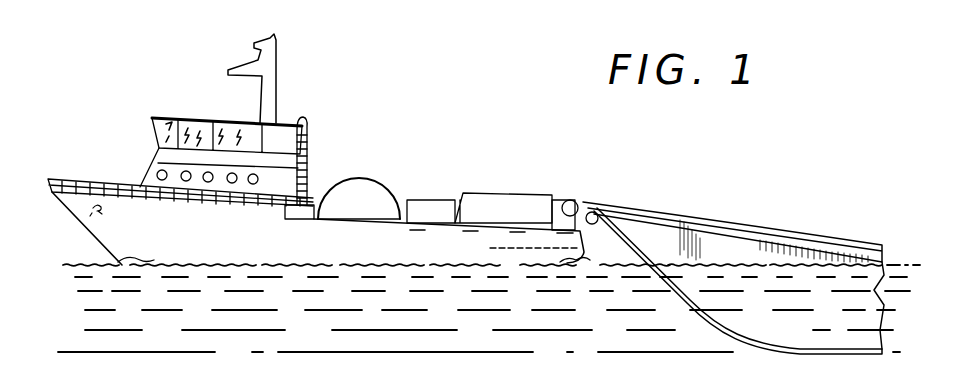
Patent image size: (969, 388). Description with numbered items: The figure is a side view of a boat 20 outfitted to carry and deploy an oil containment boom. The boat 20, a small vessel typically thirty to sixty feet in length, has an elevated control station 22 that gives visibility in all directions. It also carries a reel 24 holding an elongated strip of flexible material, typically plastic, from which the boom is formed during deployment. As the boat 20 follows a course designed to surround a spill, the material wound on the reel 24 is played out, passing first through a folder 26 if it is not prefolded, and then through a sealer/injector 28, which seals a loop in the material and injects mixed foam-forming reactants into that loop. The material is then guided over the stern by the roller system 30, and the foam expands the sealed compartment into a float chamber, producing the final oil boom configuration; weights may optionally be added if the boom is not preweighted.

The boat 20 is at (145, 147).
The elevated control station 22 is at (185, 130).
The reel 24 is at (338, 182).
The folder 26 is at (418, 202).
The sealer/injector 28 is at (497, 197).
The roller system 30 is at (598, 208).